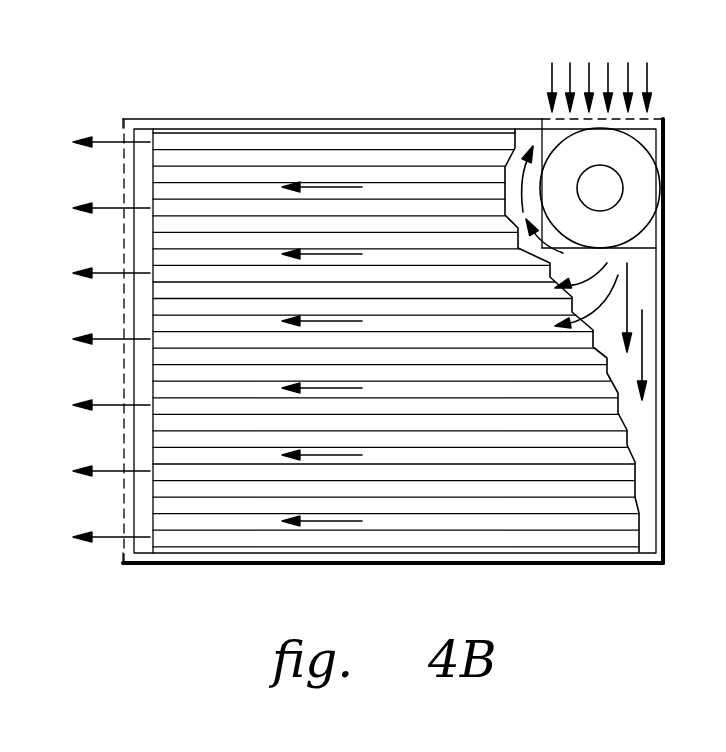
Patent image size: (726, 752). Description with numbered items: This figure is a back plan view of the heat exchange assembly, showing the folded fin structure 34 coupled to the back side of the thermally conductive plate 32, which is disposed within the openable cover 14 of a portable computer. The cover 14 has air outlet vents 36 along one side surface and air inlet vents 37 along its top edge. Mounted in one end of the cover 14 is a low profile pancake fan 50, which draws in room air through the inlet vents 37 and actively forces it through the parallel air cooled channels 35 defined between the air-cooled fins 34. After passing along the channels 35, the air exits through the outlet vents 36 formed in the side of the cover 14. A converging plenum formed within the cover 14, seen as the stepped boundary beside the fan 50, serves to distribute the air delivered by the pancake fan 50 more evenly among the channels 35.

The openable cover 14 is at (331, 106).
The thermally conductive plate 32 is at (140, 132).
The folded fin structure 34 is at (207, 178).
The air cooled channels 35 is at (398, 177).
The air outlet vents 36 is at (123, 393).
The air inlet vents 37 is at (641, 131).
The pancake fan 50 is at (637, 205).